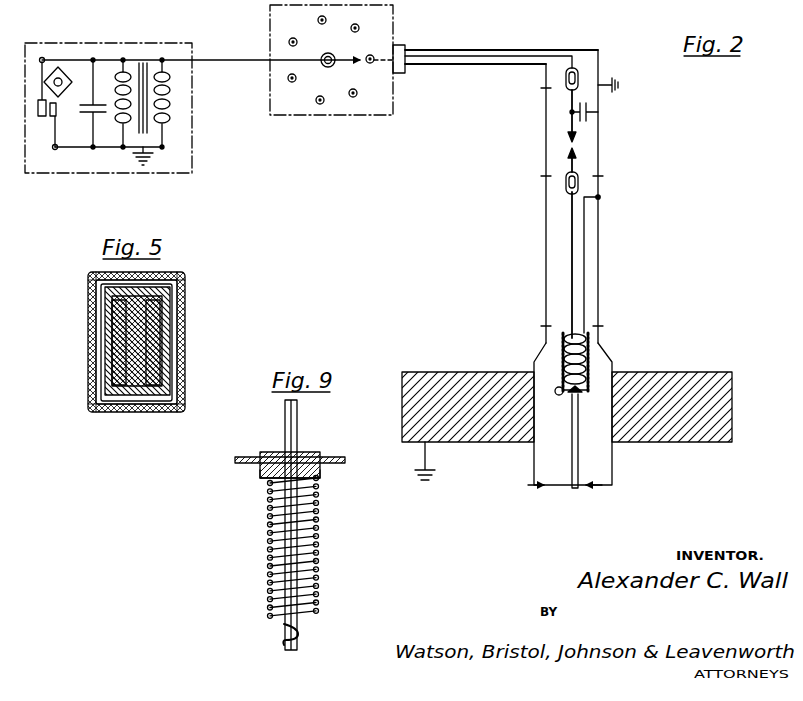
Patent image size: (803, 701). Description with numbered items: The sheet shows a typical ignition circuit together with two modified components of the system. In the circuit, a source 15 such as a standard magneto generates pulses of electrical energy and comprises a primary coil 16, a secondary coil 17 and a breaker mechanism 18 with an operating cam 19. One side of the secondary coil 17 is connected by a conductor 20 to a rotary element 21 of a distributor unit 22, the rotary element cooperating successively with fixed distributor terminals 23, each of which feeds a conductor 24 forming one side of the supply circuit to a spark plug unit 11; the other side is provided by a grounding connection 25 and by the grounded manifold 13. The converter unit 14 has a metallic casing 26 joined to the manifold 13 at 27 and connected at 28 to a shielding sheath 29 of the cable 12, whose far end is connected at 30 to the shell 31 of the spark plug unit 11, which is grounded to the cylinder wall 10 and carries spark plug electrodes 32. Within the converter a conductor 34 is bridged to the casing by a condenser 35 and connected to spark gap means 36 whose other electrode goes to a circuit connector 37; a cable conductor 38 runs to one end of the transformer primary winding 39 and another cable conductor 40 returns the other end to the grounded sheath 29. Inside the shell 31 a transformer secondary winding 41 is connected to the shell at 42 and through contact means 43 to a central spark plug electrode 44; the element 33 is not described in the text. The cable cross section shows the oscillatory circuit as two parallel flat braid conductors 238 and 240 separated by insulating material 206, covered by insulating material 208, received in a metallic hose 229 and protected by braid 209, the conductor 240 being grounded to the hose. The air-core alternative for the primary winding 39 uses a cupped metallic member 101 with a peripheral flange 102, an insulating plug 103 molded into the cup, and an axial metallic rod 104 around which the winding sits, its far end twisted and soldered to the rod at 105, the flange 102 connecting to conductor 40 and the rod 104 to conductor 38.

In FIG. 2, the cylinder wall 10 is at (726, 372).
In FIG. 2, the spark plug unit 11 is at (614, 356).
In FIG. 2, the connecting cable 12 is at (604, 262).
In FIG. 5, the connecting cable 12 is at (86, 377).
In FIG. 2, the manifold 13 is at (478, 43).
In FIG. 2, the converter unit 14 is at (603, 143).
In FIG. 2, the source 15 is at (196, 159).
In FIG. 2, the primary coil 16 is at (128, 62).
In FIG. 2, the secondary coil 17 is at (170, 92).
In FIG. 2, the breaker mechanism 18 is at (49, 122).
In FIG. 2, the operating cam 19 is at (62, 70).
In FIG. 2, the conductor 20 is at (223, 60).
In FIG. 2, the rotary element 21 is at (352, 63).
In FIG. 2, the distributor unit 22 is at (337, 116).
In FIG. 2, the fixed distributor terminals 23 is at (376, 57).
In FIG. 2, the conductor 24 is at (510, 56).
In FIG. 2, the grounding connection 25 is at (132, 150).
In FIG. 2, the metallic casing 26 is at (543, 136).
In FIG. 2, the connection 27 is at (604, 82).
In FIG. 2, the connection 28 is at (542, 178).
In FIG. 2, the shielding sheath 29 is at (543, 254).
In FIG. 2, the connection 30 is at (543, 327).
In FIG. 2, the shell 31 is at (532, 364).
In FIG. 2, the spark plug electrodes 32 is at (534, 485).
In FIG. 2, the mercury switch 33 is at (580, 72).
In FIG. 2, the conductor 34 is at (590, 98).
In FIG. 2, the condenser 35 is at (590, 115).
In FIG. 2, the spark gap means 36 is at (566, 147).
In FIG. 2, the circuit connector 37 is at (565, 193).
In FIG. 2, the cable conductor 38 is at (572, 278).
In FIG. 2, the transformer primary winding 39 is at (600, 338).
In FIG. 9, the transformer primary winding 39 is at (318, 535).
In FIG. 2, the cable conductor 40 is at (586, 292).
In FIG. 2, the transformer secondary winding 41 is at (560, 342).
In FIG. 2, the connection 42 is at (592, 348).
In FIG. 2, the contact means 43 is at (560, 396).
In FIG. 2, the central spark plug electrode 44 is at (579, 462).
In FIG. 5, the metallic hose 229 is at (90, 291).
In FIG. 5, the insulating material 208 is at (103, 300).
In FIG. 5, the conductor 240 is at (114, 327).
In FIG. 5, the protective braid 209 is at (94, 352).
In FIG. 5, the conductor 238 is at (160, 320).
In FIG. 5, the insulating material 206 is at (170, 355).
In FIG. 9, the cupped metallic member 101 is at (258, 476).
In FIG. 9, the peripheral flange 102 is at (245, 457).
In FIG. 9, the plug 103 is at (300, 455).
In FIG. 9, the metallic rod 104 is at (283, 421).
In FIG. 9, the soldered connection 105 is at (305, 637).